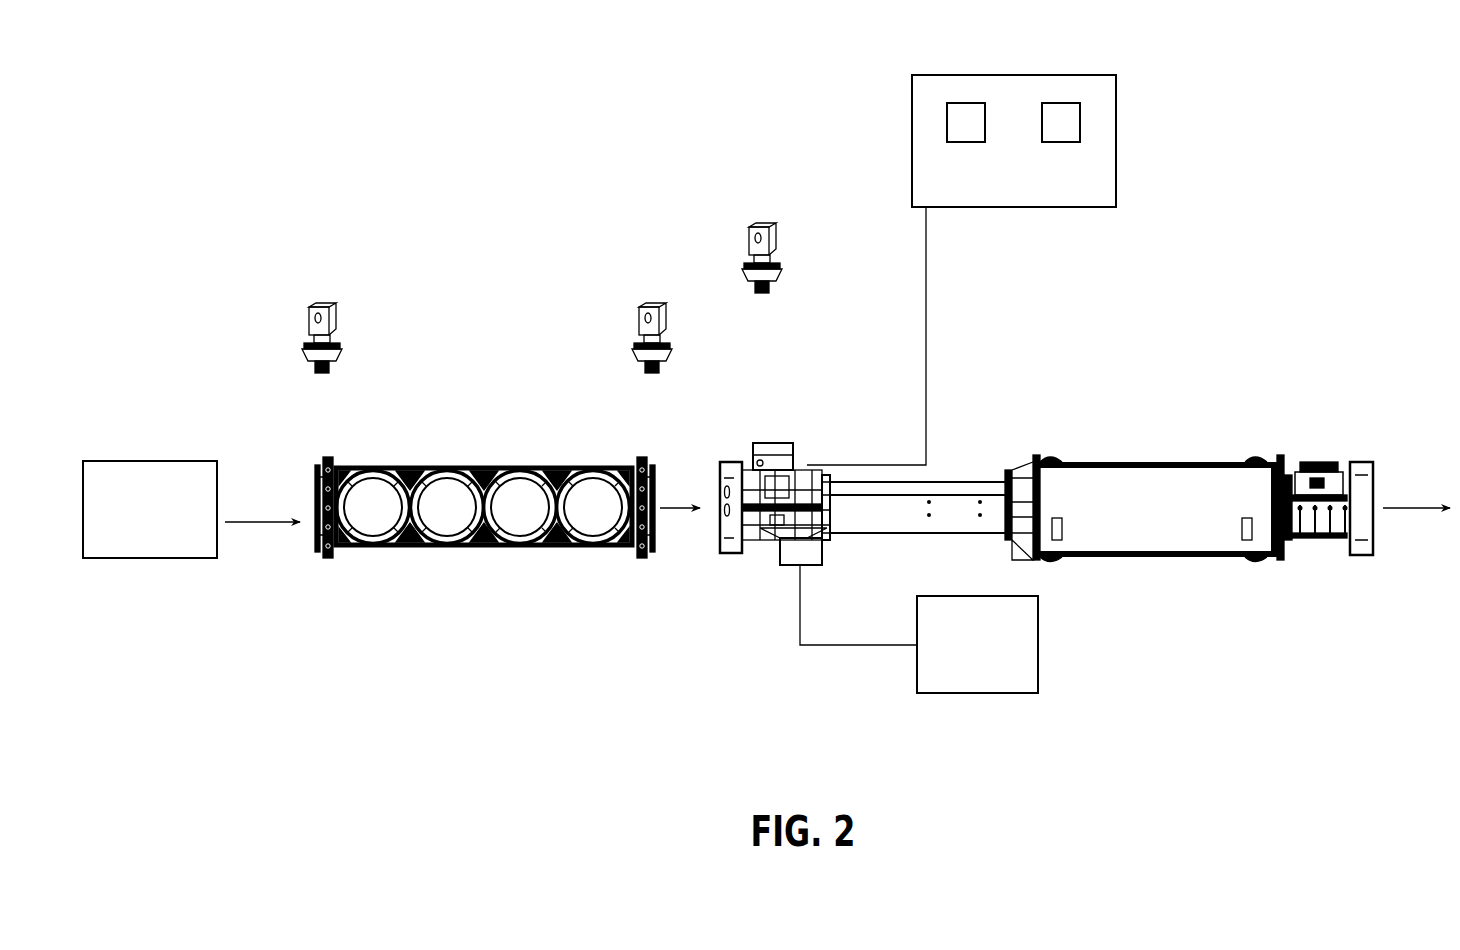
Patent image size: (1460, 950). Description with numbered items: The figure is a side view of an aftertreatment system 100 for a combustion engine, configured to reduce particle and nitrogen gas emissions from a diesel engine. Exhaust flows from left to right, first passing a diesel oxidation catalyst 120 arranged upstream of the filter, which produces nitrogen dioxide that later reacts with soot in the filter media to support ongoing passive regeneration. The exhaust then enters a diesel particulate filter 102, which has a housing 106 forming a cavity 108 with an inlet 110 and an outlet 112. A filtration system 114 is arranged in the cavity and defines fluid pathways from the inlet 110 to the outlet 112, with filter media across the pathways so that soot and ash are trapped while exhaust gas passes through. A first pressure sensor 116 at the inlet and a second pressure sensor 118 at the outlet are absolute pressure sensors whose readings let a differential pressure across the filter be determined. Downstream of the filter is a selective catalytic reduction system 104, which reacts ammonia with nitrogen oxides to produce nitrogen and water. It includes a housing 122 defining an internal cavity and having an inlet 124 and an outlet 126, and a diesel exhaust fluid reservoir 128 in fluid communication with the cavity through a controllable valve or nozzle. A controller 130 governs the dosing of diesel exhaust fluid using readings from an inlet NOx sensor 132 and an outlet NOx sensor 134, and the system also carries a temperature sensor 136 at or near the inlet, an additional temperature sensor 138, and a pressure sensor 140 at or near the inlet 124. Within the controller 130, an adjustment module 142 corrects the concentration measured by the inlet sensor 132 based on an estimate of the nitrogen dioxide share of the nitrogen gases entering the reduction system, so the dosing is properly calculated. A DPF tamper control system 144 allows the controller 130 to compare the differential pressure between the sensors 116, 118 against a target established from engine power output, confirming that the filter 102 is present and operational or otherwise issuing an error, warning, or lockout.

The aftertreatment system 100 is at (1152, 222).
The diesel particulate filter 102 is at (453, 524).
The selective catalytic reduction system 104 is at (1141, 536).
The housing 106 is at (413, 466).
The cavity 108 is at (487, 482).
The inlet 110 is at (315, 477).
The outlet 112 is at (663, 545).
The filtration system 114 is at (432, 547).
The first pressure sensor 116 is at (320, 447).
The second pressure sensor 118 is at (648, 447).
The diesel oxidation catalyst 120 is at (148, 460).
The housing 122 is at (1096, 462).
The inlet 124 is at (713, 527).
The outlet 126 is at (1373, 486).
The diesel exhaust fluid reservoir 128 is at (980, 680).
The controller 130 is at (961, 241).
The inlet NOx sensor 132 is at (796, 457).
The outlet NOx sensor 134 is at (1312, 452).
The temperature sensor 136 is at (782, 430).
The temperature sensor 138 is at (1305, 452).
The pressure sensor 140 is at (763, 430).
The adjustment module 142 is at (970, 120).
The DPF tamper control system 144 is at (1060, 115).